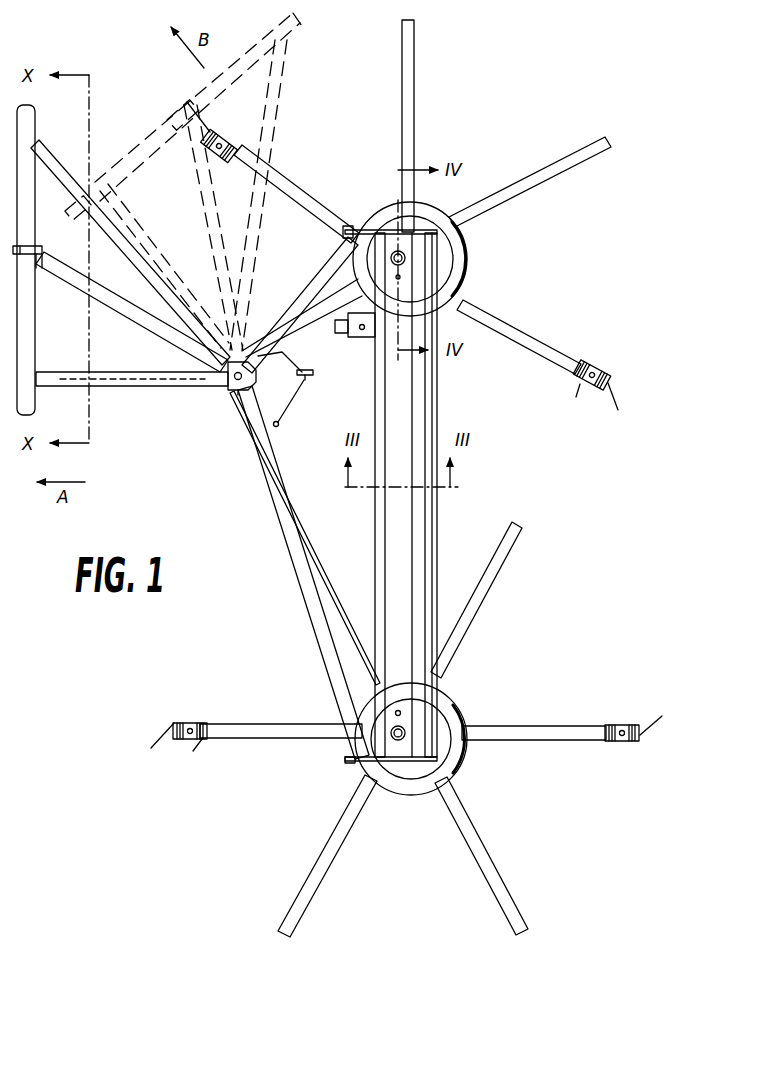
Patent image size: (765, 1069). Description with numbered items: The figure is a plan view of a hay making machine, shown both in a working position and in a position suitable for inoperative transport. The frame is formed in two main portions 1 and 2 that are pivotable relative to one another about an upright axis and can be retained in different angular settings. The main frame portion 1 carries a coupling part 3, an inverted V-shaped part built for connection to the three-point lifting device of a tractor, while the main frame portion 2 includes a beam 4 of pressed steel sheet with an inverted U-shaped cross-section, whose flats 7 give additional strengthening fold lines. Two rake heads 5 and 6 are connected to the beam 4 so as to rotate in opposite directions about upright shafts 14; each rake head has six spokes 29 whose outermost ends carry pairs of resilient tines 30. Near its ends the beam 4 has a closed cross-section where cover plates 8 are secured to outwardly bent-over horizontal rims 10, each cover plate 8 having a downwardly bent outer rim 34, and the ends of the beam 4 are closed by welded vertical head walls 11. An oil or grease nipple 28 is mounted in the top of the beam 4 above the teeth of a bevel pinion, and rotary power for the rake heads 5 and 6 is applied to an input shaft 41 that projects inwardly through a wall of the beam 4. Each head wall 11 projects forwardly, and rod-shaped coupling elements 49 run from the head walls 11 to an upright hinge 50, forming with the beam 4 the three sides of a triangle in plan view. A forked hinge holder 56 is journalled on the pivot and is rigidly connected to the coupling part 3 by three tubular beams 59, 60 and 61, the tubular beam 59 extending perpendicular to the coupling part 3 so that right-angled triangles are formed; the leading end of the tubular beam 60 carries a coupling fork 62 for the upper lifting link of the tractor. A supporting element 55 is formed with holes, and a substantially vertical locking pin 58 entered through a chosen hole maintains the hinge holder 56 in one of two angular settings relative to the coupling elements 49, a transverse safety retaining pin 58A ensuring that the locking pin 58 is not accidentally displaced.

The main frame portion 1 is at (140, 384).
The main frame portion 2 is at (306, 608).
The coupling part 3 is at (28, 334).
The beam 4 is at (385, 504).
The rake head 5 is at (556, 186).
The rake head 6 is at (498, 869).
The flats 7 is at (376, 546).
The cover plate 8 is at (448, 262).
The horizontal rims 10 is at (436, 543).
The head wall 11 is at (370, 226).
The upright shaft 14 is at (402, 250).
The oil or grease nipple 28 is at (402, 712).
The spokes 29 is at (402, 124).
The resilient tines 30 is at (612, 402).
The rim 34 is at (464, 270).
The input shaft 41 is at (345, 336).
The coupling elements 49 is at (322, 272).
The upright hinge 50 is at (226, 388).
The supporting element 55 is at (296, 400).
The hinge holder 56 is at (238, 394).
The locking pin 58 is at (316, 378).
The safety retaining pin 58A is at (280, 426).
The tubular beam 59 is at (175, 384).
The tubular beam 60 is at (148, 323).
The tubular beam 61 is at (52, 166).
The coupling fork 62 is at (40, 247).